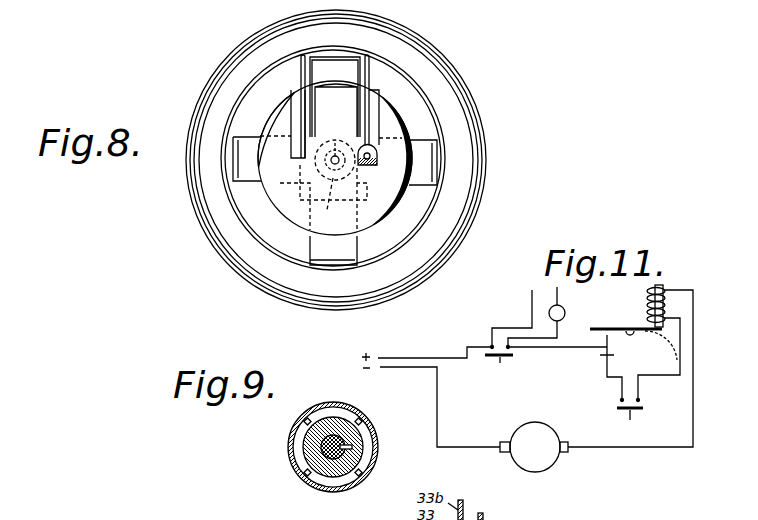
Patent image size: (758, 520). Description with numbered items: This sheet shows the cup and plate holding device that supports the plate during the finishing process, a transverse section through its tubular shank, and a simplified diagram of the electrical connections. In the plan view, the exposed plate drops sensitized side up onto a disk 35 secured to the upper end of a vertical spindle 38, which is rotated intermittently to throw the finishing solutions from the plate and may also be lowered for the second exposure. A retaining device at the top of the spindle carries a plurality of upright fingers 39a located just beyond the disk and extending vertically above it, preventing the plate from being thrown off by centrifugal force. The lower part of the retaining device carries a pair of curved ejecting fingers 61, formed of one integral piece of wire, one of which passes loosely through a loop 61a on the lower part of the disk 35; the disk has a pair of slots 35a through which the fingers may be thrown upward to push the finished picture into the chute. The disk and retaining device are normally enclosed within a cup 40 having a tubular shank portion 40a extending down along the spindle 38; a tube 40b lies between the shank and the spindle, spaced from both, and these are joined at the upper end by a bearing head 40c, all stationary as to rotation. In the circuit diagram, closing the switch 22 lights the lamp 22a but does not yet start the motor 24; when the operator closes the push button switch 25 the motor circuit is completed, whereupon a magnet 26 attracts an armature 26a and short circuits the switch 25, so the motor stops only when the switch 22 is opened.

In FIG. 8, the disk 35 is at (289, 193).
In FIG. 8, the slots 35a is at (296, 113).
In FIG. 8, the spindle 38 is at (333, 185).
In FIG. 9, the spindle 38 is at (323, 478).
In FIG. 8, the upright fingers 39a is at (347, 47).
In FIG. 8, the cup 40 is at (443, 262).
In FIG. 9, the tubular shank portion 40a is at (314, 408).
In FIG. 9, the tube 40b is at (300, 430).
In FIG. 9, the bearing head 40c is at (303, 447).
In FIG. 8, the curved ejecting fingers 61 is at (370, 76).
In FIG. 8, the loop 61a is at (379, 157).
In FIG. 11, the switch 22 is at (499, 365).
In FIG. 11, the lamp 22a is at (549, 316).
In FIG. 11, the motor 24 is at (549, 467).
In FIG. 11, the second switch 25 is at (634, 420).
In FIG. 11, the magnet 26 is at (651, 297).
In FIG. 11, the armature 26a is at (603, 322).